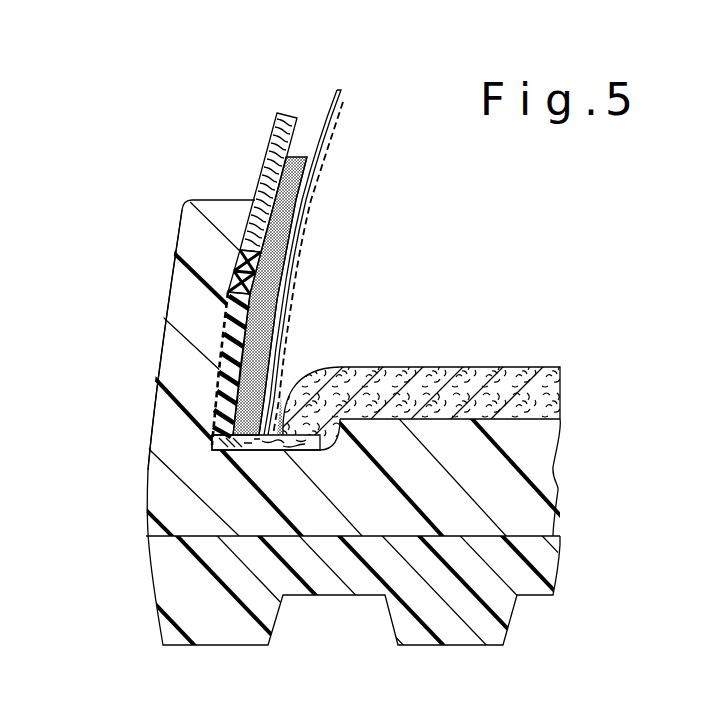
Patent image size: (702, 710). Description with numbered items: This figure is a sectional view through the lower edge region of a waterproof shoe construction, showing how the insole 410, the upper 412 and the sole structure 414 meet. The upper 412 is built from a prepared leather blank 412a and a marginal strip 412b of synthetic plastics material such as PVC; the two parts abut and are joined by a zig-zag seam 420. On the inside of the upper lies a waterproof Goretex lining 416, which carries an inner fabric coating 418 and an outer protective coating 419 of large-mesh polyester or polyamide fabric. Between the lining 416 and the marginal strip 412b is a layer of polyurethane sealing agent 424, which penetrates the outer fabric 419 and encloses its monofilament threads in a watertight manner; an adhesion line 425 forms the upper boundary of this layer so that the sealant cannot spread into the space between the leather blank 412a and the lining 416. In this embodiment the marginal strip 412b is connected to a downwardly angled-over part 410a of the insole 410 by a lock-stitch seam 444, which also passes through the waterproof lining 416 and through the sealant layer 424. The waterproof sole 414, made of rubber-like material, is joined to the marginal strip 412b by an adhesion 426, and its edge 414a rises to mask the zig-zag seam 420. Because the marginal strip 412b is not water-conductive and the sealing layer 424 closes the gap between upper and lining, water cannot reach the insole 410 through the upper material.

The insole 410 is at (527, 367).
The downwardly angled-over part of the insole 410a is at (348, 362).
The upper 412 is at (235, 256).
The prepared blank 412a is at (262, 168).
The marginal strip 412b is at (212, 403).
The sole structure 414 is at (147, 505).
The edge of the sole 414a is at (181, 313).
The waterproof lining 416 is at (338, 92).
The inner fabric coating 418 is at (330, 127).
The outer protective coating 419 is at (324, 104).
The zig-zag seam 420 is at (235, 249).
The layer of polyurethane sealing agent 424 is at (292, 243).
The adhesion line 425 is at (308, 178).
The adhesion 426 is at (214, 373).
The lock-stitch seam 444 is at (281, 397).